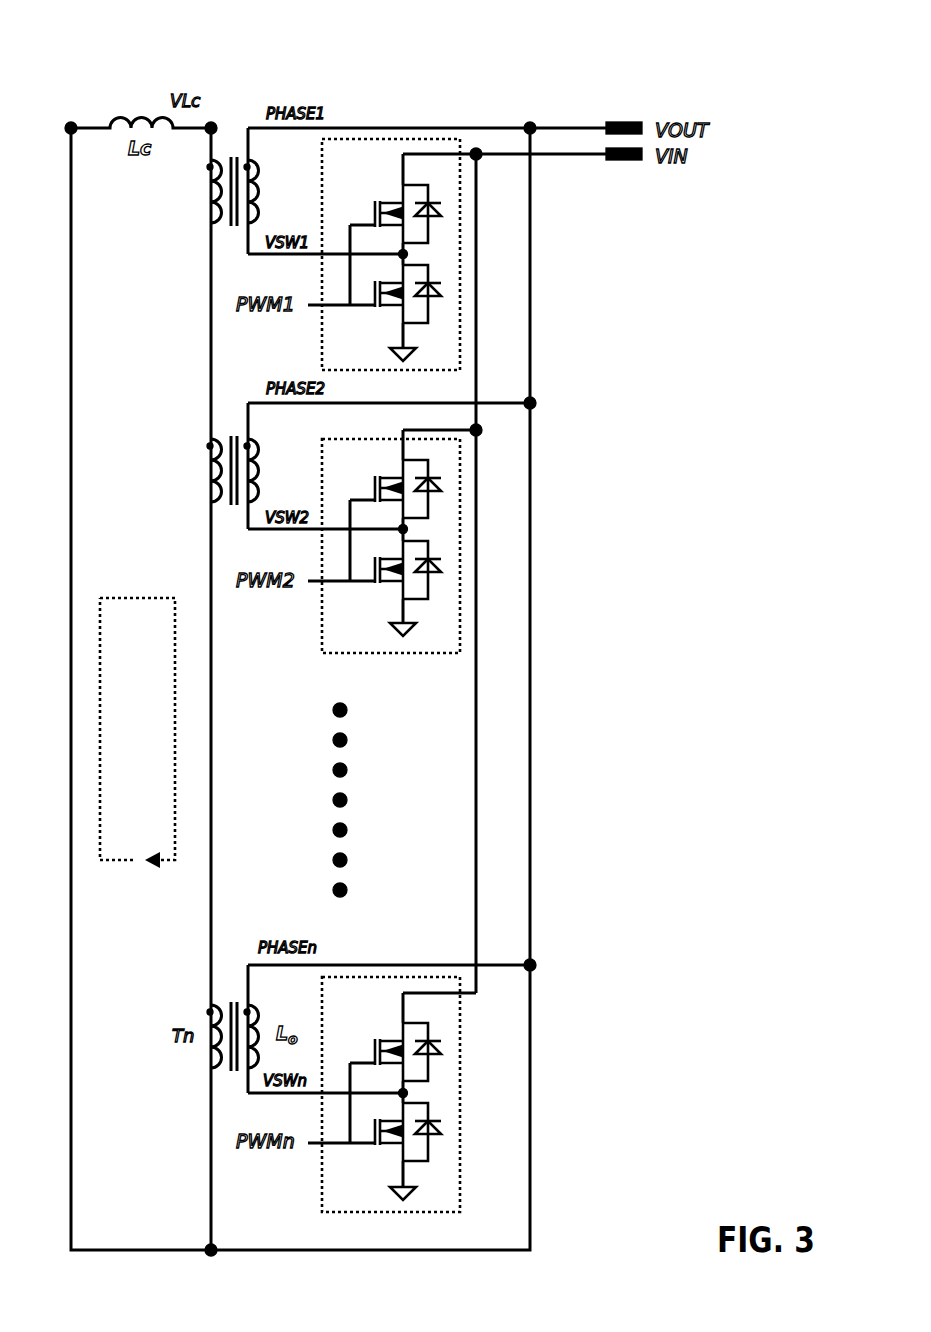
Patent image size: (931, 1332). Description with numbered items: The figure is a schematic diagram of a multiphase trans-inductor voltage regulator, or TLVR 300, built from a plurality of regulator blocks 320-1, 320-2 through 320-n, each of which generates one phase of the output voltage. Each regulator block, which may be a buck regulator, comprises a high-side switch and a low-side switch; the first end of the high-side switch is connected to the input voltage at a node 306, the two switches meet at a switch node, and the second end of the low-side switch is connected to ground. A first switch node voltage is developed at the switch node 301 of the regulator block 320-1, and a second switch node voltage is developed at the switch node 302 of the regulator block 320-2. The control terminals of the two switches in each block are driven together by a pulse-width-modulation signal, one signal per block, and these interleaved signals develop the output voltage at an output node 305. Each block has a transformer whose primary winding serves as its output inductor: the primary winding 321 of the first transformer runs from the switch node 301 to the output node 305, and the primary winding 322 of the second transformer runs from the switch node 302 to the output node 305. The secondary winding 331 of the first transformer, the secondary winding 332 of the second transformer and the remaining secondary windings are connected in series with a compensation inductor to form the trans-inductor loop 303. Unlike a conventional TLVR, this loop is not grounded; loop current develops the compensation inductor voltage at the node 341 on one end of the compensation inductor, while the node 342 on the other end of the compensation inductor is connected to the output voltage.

The multiphase TLVR 300 is at (762, 66).
The switch node 301 is at (407, 254).
The switch node 302 is at (407, 529).
The trans-inductor loop 303 is at (142, 598).
The output node 305 is at (624, 119).
The node 306 is at (622, 164).
The regulator block 320-1 is at (322, 352).
The regulator block 320-2 is at (322, 635).
The regulator block 320-n is at (322, 1194).
The primary winding 321 is at (268, 178).
The primary winding 322 is at (267, 455).
The secondary winding 331 is at (200, 200).
The secondary winding 332 is at (200, 468).
The node 341 is at (216, 124).
The node 342 is at (72, 124).